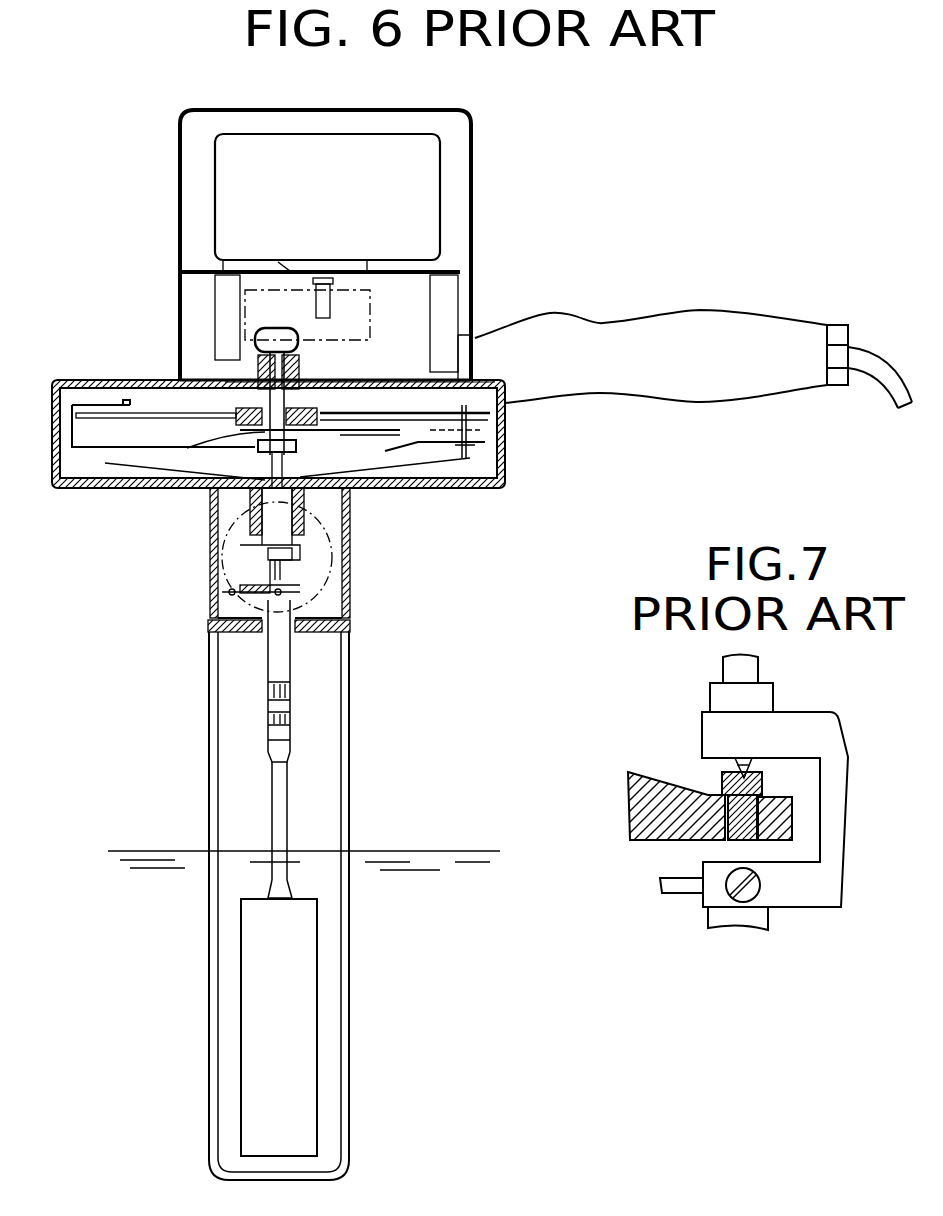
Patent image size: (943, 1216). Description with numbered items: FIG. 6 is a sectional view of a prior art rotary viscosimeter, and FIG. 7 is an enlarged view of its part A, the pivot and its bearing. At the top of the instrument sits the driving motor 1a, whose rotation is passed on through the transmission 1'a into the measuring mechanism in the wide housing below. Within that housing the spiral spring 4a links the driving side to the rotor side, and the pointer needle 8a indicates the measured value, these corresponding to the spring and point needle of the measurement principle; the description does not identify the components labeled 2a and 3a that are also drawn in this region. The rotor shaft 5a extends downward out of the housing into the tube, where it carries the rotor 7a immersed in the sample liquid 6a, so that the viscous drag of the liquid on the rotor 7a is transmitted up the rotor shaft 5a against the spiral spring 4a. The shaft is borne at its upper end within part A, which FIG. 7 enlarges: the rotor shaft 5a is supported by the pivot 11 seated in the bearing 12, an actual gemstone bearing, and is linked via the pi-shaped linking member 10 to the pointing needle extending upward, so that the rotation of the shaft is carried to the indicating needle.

In FIG. 6, the driving motor 1a is at (432, 168).
In FIG. 6, the transmission 1'a is at (333, 309).
In FIG. 6, the central shaft 2a is at (302, 388).
In FIG. 6, the terminal 3a is at (490, 412).
In FIG. 6, the spiral spring 4a is at (262, 436).
In FIG. 6, the pointer needle 8a is at (100, 408).
In FIG. 6, the part A is at (335, 545).
In FIG. 6, the rotor shaft 5a is at (285, 662).
In FIG. 7, the rotor shaft 5a is at (767, 917).
In FIG. 6, the sample liquid 6a is at (430, 853).
In FIG. 6, the rotor 7a is at (305, 998).
In FIG. 7, the π-shaped linking member 10 is at (848, 752).
In FIG. 7, the pivot 11 is at (745, 763).
In FIG. 7, the bearing 12 is at (762, 781).